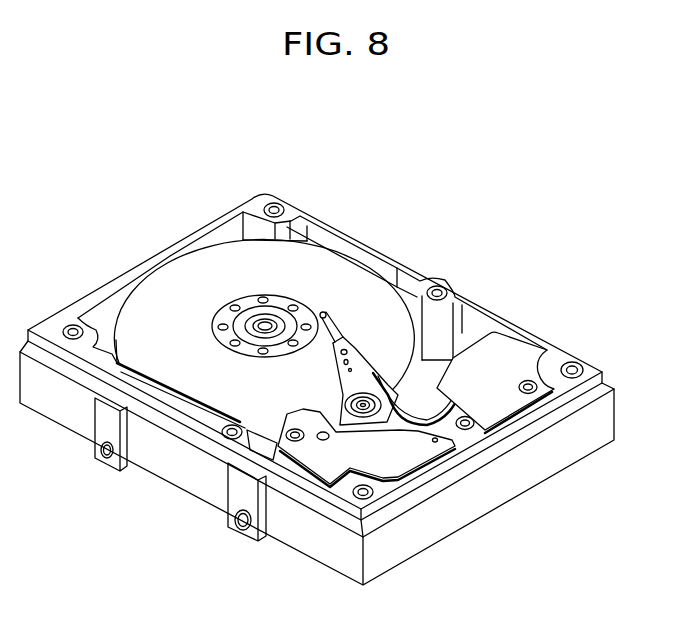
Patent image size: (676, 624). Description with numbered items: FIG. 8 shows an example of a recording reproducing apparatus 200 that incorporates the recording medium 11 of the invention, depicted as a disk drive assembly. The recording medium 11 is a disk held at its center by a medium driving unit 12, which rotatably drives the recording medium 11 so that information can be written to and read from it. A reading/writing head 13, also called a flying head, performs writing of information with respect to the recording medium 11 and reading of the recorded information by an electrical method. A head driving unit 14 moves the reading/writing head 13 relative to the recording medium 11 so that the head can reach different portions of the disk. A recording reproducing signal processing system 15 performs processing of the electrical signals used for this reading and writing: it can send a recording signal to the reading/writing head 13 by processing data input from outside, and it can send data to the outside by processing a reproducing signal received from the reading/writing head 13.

The hard disk drive 200 is at (492, 207).
The recording medium 11 is at (310, 277).
The medium driving unit 12 is at (220, 305).
The reading/writing head 13 is at (322, 312).
The head driving unit 14 is at (388, 450).
The recording reproducing signal processing system 15 is at (510, 365).